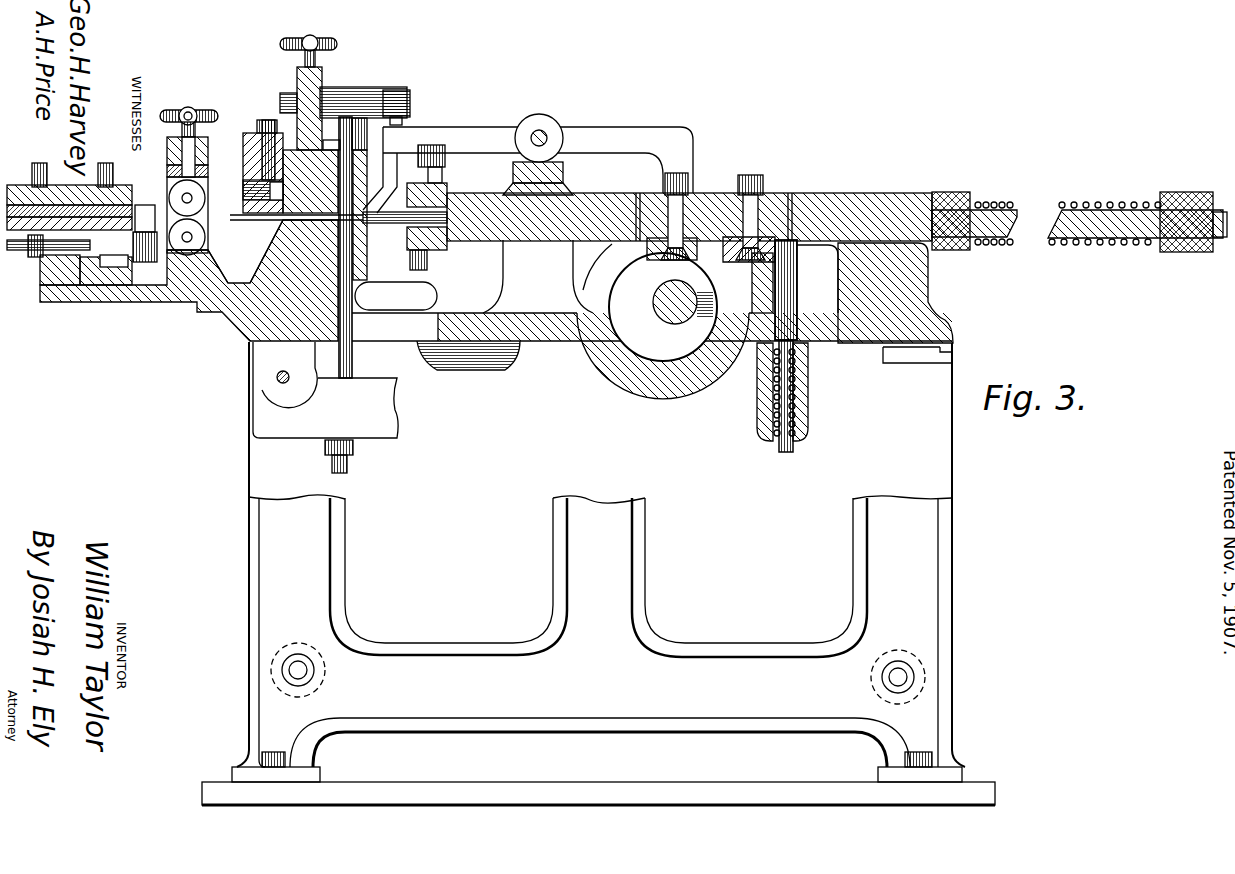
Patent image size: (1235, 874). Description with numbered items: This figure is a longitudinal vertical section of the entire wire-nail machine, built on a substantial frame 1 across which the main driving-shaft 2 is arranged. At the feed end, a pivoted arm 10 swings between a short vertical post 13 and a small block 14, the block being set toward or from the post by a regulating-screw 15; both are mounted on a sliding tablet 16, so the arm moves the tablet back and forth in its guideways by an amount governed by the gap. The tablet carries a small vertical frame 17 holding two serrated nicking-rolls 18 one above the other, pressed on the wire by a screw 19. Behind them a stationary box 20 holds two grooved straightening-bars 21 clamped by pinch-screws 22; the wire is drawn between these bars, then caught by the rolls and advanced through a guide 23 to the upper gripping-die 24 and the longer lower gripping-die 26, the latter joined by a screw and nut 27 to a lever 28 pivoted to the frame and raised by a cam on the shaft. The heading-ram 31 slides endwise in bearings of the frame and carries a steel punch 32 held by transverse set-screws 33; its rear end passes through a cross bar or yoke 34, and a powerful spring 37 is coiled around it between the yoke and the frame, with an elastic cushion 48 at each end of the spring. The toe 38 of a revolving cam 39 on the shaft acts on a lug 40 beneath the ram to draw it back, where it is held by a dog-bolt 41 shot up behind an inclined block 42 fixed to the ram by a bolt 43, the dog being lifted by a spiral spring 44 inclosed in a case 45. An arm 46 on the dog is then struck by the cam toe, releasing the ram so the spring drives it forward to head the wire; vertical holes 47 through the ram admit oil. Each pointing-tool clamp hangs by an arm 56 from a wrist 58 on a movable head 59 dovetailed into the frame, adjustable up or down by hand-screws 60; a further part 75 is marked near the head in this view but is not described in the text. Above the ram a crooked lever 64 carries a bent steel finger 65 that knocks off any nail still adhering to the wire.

The frame 1 is at (592, 498).
The main driving-shaft 2 is at (666, 305).
The pivoted arm 10 is at (122, 286).
The vertical post 13 is at (145, 234).
The block 14 is at (80, 286).
The regulating-screw 15 is at (47, 255).
The sliding tablet 16 is at (209, 266).
The vertical frame 17 is at (200, 157).
The nicking-rolls 18 is at (205, 198).
The screw 19 is at (189, 110).
The stationary box 20 is at (69, 198).
The straightening-bars 21 is at (149, 211).
The pinch-screws 22 is at (67, 168).
The guide 23 is at (263, 251).
The upper gripping-die 24 is at (298, 200).
The lower gripping-die 26 is at (357, 247).
The screw and nut 27 is at (350, 456).
The lever 28 is at (325, 390).
The heading-ram 31 is at (689, 217).
The punch 32 is at (405, 223).
The set-screws 33 is at (441, 210).
The cross bar or yoke 34 is at (1193, 212).
The spring 37 is at (1062, 210).
The toe 38 is at (663, 307).
The cam 39 is at (663, 356).
The lug 40 is at (647, 250).
The dog-bolt 41 is at (797, 247).
The inclined block 42 is at (745, 257).
The bolt 43 is at (748, 207).
The spiral spring 44 is at (803, 396).
The case 45 is at (796, 392).
The arm 46 is at (760, 305).
The vertical holes 47 is at (637, 197).
The elastic cushion 48 is at (968, 247).
The arm 56 is at (343, 94).
The wrist 58 is at (413, 99).
The movable head 59 is at (323, 80).
The hand-screws 60 is at (308, 42).
The crooked lever 64 is at (538, 154).
The bent steel finger 65 is at (389, 170).
The sleeve 75 is at (344, 134).